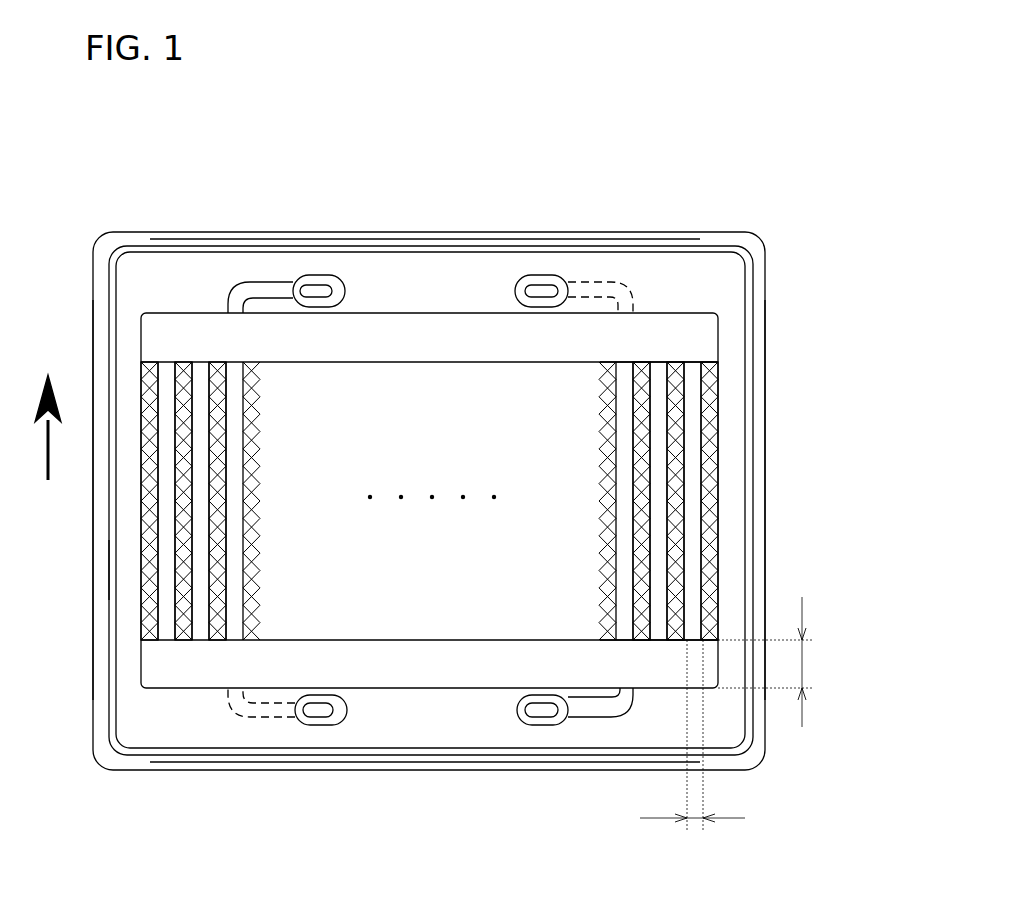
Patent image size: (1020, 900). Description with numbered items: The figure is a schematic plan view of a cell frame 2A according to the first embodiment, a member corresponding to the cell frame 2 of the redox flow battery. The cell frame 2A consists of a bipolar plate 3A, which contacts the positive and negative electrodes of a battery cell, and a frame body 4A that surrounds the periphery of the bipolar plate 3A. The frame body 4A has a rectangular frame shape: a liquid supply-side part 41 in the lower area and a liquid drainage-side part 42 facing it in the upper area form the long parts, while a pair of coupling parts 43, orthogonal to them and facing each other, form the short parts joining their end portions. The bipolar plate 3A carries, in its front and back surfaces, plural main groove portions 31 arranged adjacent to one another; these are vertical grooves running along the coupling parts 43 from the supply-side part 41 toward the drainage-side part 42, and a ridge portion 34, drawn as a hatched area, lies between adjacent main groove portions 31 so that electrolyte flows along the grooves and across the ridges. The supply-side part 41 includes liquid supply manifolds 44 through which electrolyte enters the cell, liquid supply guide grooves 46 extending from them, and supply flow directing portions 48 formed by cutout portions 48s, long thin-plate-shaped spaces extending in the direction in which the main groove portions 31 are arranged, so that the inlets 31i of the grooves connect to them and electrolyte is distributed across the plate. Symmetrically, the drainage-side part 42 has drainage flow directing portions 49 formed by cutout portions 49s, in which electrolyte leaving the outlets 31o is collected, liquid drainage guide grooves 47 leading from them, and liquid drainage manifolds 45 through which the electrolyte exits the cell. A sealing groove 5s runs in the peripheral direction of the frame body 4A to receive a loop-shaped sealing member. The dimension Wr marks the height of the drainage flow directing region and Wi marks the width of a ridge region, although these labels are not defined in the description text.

The cell frame 2A is at (710, 228).
The cell frame 2 is at (461, 445).
The frame body 4A is at (130, 232).
The sealing groove 5s is at (108, 568).
The bipolar plate 3A is at (495, 488).
The main groove portions 31 is at (672, 392).
The outlets 31o is at (657, 360).
The inlets 31i is at (628, 640).
The ridge portion 34 is at (690, 438).
The liquid supply-side part 41 is at (378, 728).
The liquid drainage-side part 42 is at (180, 270).
The coupling parts 43 is at (95, 598).
The liquid supply manifolds 44 is at (322, 716).
The liquid drainage manifolds 45 is at (320, 286).
The liquid supply guide grooves 46 is at (254, 720).
The liquid drainage guide grooves 47 is at (270, 290).
The supply flow directing portions 48 is at (429, 733).
The cutout portions 48s is at (463, 660).
The drainage flow directing portions 49 is at (429, 271).
The cutout portions 49s is at (458, 332).
The width of end region Wr is at (780, 662).
The width of inner gap Wi is at (692, 754).